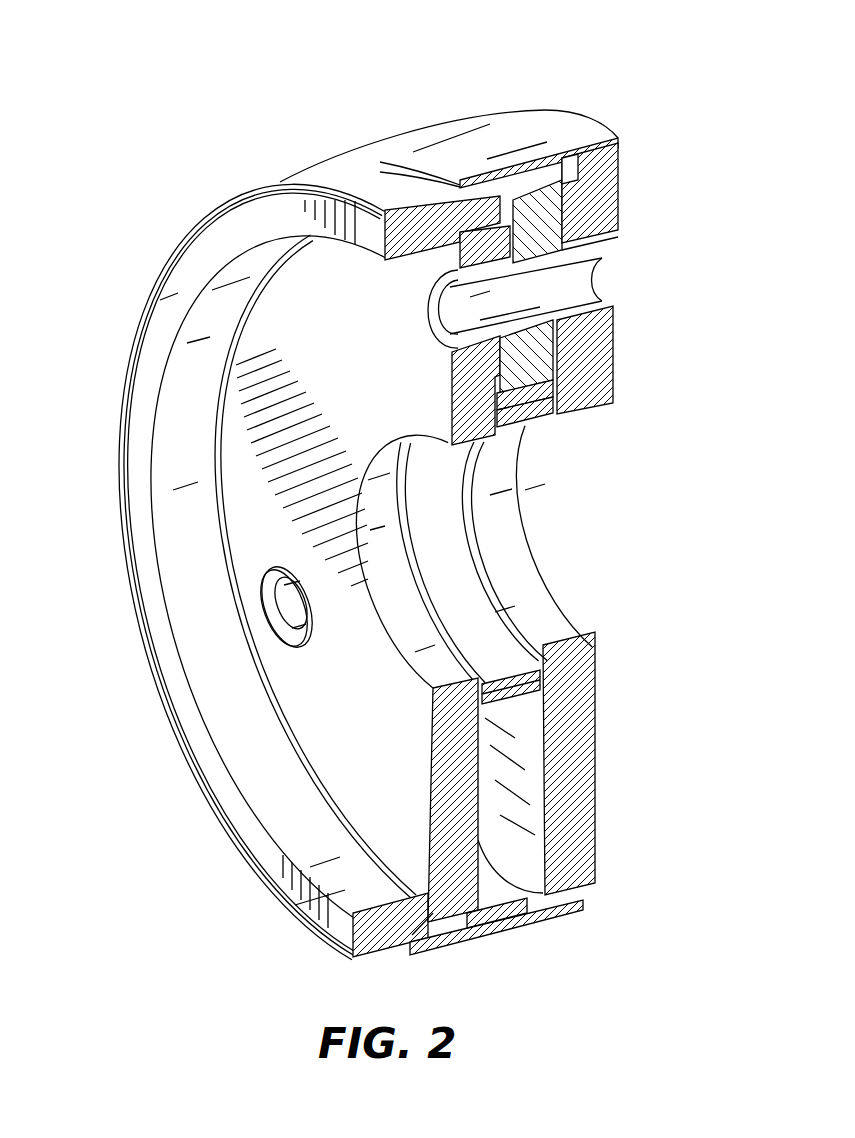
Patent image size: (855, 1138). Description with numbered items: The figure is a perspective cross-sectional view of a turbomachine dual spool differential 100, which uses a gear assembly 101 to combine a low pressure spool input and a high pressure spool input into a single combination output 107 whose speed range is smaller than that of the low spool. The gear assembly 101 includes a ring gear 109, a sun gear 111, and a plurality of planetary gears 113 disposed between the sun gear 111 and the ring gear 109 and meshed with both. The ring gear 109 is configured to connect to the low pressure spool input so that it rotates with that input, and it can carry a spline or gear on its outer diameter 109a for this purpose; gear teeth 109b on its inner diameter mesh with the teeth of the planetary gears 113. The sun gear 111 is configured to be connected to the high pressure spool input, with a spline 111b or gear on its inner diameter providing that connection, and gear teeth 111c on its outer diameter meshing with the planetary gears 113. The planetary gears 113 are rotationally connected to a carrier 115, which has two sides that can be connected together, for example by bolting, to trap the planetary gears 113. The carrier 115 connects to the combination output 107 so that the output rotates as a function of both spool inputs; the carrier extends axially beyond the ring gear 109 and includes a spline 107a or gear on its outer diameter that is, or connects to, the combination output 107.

The turbomachine dual spool differential 100 is at (246, 62).
The gear assembly 101 is at (652, 308).
The combination output 107 is at (233, 197).
The spline 107a is at (373, 187).
The ring gear 109 is at (583, 900).
The outer diameter 109a is at (525, 137).
The gear teeth 109b is at (493, 903).
The sun gear 111 is at (593, 648).
The spline 111b is at (475, 620).
The gear teeth 111c is at (510, 706).
The planetary gears 113 is at (523, 330).
The carrier 115 is at (290, 355).